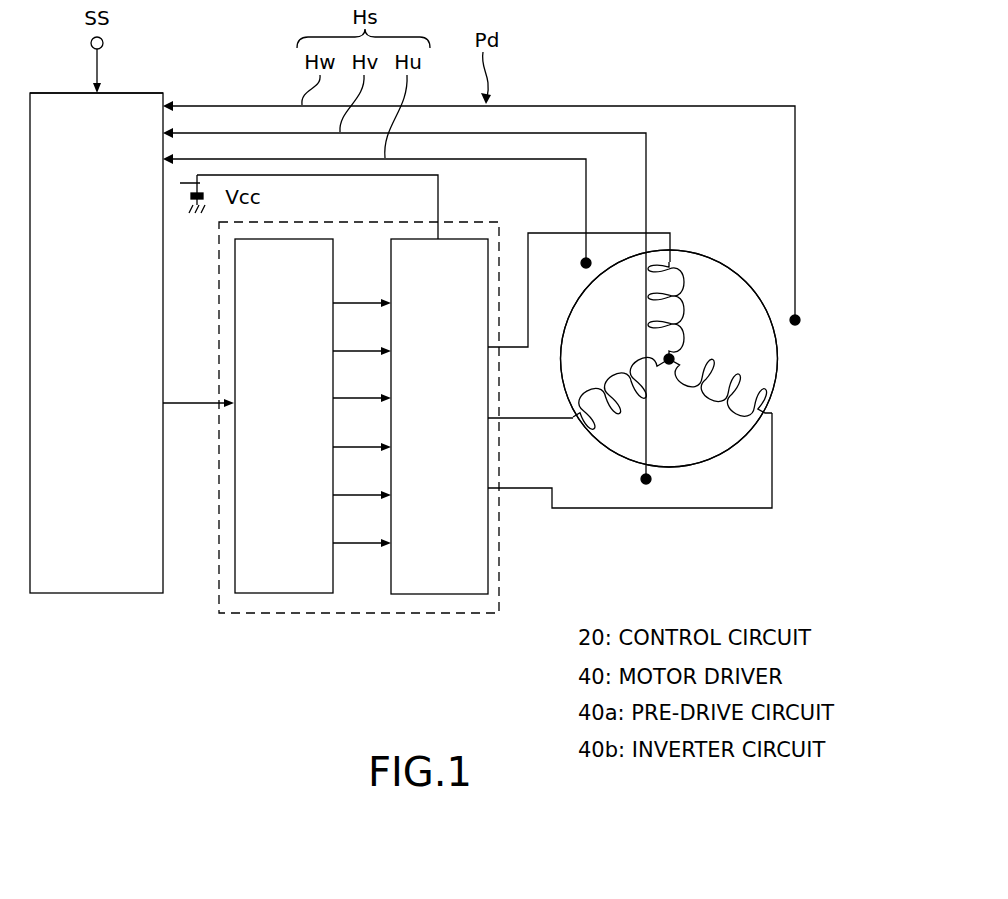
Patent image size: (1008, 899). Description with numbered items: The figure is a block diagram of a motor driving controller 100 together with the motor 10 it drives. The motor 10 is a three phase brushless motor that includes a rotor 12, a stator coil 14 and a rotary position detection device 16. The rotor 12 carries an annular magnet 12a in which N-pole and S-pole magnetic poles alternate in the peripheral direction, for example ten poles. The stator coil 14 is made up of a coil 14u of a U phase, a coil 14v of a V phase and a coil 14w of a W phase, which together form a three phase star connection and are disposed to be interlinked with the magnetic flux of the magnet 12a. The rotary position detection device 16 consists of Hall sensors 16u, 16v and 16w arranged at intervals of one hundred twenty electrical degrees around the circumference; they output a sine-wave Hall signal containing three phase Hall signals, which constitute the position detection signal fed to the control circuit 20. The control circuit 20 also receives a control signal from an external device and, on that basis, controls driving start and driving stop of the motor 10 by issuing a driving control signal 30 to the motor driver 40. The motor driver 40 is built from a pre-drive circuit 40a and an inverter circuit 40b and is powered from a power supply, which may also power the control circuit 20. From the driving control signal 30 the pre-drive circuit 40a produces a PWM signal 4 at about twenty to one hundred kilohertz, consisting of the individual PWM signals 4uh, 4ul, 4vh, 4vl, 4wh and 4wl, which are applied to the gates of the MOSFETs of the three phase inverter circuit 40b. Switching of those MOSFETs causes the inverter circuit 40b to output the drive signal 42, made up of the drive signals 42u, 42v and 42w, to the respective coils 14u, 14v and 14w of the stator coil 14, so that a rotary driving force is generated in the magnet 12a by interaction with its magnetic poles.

The motor driving controller 100 is at (229, 86).
The motor 10 is at (797, 401).
The rotor 12 is at (775, 389).
The magnet 12a is at (778, 359).
The stator coil 14 is at (692, 232).
The coil of a U phase 14u is at (700, 280).
The coil of a V phase 14v is at (588, 424).
The coil of a W phase 14w is at (715, 410).
The rotary position detection device 16 is at (633, 492).
The Hall sensor 16u is at (582, 258).
The Hall sensor 16v is at (648, 486).
The Hall sensor 16w is at (800, 320).
The control circuit 20 is at (90, 575).
The driving control signal 30 is at (180, 406).
The motor driver 40 is at (362, 615).
The pre-drive circuit 40a is at (275, 575).
The inverter circuit 40b is at (433, 582).
The PWM signal 4 is at (355, 250).
The PWM signal 4uh is at (350, 302).
The PWM signal 4ul is at (350, 350).
The PWM signal 4vh is at (350, 397).
The PWM signal 4vl is at (350, 446).
The PWM signal 4wh is at (350, 494).
The PWM signal 4wl is at (350, 542).
The drive signal 42 is at (517, 558).
The drive signal 42u is at (509, 351).
The drive signal 42v is at (509, 421).
The drive signal 42w is at (509, 491).